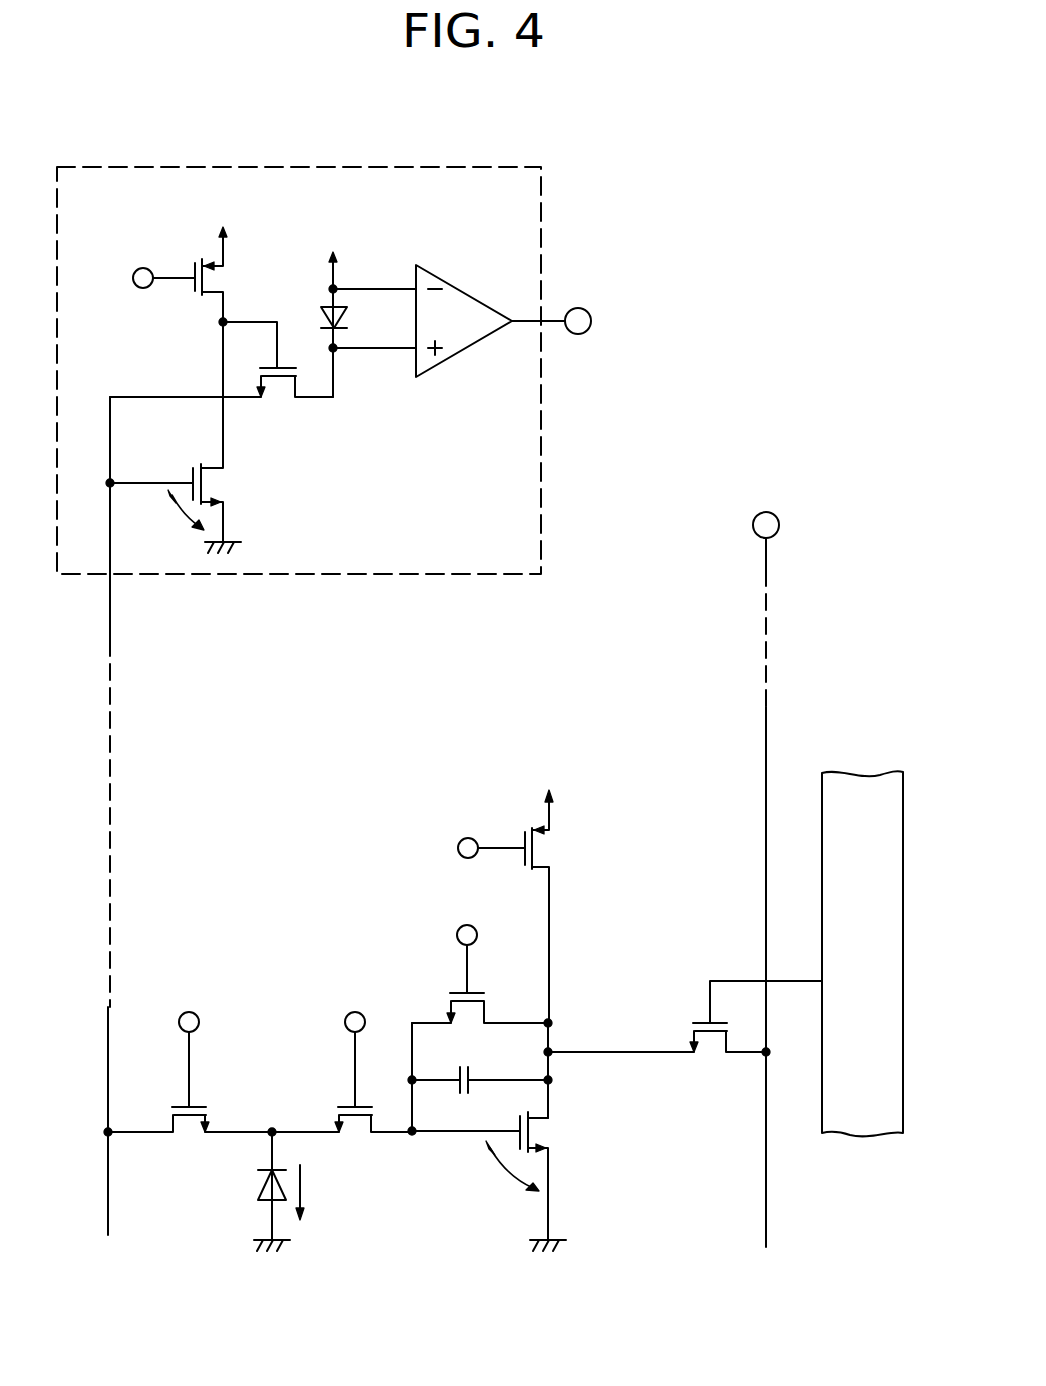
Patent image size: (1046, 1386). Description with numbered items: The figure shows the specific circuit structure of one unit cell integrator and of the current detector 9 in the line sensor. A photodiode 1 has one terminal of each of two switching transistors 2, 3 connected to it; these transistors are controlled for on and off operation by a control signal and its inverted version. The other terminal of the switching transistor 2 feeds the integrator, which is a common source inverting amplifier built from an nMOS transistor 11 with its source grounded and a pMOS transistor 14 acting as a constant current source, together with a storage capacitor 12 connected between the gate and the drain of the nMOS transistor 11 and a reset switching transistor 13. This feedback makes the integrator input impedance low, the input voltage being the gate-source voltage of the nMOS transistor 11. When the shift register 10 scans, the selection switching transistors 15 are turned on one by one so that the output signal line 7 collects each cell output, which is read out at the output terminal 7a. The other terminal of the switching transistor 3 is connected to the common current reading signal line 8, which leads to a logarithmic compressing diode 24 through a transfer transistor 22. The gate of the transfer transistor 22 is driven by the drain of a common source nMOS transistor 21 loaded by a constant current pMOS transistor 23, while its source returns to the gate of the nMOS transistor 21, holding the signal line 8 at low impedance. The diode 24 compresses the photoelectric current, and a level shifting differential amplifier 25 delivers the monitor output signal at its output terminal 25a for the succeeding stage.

The photodiode 1 is at (254, 1184).
The switching transistor 2 is at (357, 1136).
The switching transistor 3 is at (190, 1138).
The output signal line 7 is at (765, 797).
The output terminal 7a is at (753, 532).
The current reading signal line 8 is at (108, 933).
The current detector 9 is at (541, 208).
The shift register 10 is at (863, 1136).
The nMOS transistor 11 is at (552, 1129).
The storage capacitor 12 is at (462, 1093).
The reset switching transistor 13 is at (470, 1018).
The pMOS transistor 14 is at (549, 851).
The selection switching transistor 15 is at (710, 1054).
The nMOS transistor 21 is at (229, 487).
The transfer transistor 22 is at (282, 388).
The pMOS transistor 23 is at (185, 312).
The logarithmic compressing diode 24 is at (323, 311).
The differential amplifier 25 is at (462, 360).
The output terminal 25a is at (582, 336).